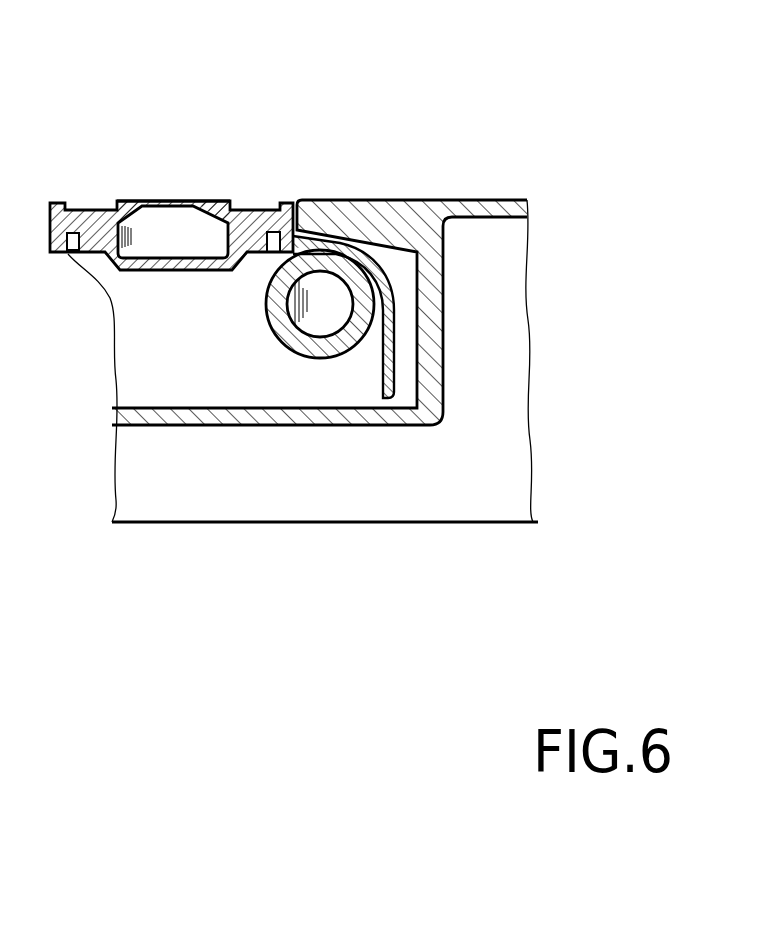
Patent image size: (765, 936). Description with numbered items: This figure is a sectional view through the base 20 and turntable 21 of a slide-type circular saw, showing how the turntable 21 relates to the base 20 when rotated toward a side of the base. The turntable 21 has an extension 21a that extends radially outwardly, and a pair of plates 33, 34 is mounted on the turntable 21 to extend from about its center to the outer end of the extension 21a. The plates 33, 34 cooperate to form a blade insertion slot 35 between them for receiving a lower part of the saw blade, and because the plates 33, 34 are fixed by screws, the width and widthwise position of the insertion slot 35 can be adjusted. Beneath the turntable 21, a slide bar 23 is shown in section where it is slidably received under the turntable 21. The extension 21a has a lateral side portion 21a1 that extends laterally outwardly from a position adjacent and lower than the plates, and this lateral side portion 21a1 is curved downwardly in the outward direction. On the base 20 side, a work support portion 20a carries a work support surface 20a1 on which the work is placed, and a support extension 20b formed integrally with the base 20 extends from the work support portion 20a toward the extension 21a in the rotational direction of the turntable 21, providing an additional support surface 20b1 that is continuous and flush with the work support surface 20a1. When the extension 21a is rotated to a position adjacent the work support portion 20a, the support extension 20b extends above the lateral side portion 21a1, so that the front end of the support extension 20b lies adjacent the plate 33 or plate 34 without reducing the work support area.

The base 20 is at (345, 307).
The work support portion 20a is at (532, 141).
The work support surface 20a1 is at (513, 195).
The support extension 20b is at (396, 133).
The additional support surface 20b1 is at (413, 196).
The turntable 21 is at (222, 158).
The extension 21a is at (222, 158).
The lateral side portion 21a1 is at (386, 358).
The slide bar 23 is at (292, 353).
The plate 33 is at (128, 205).
The plate 34 is at (203, 203).
The blade insertion slot 35 is at (167, 205).